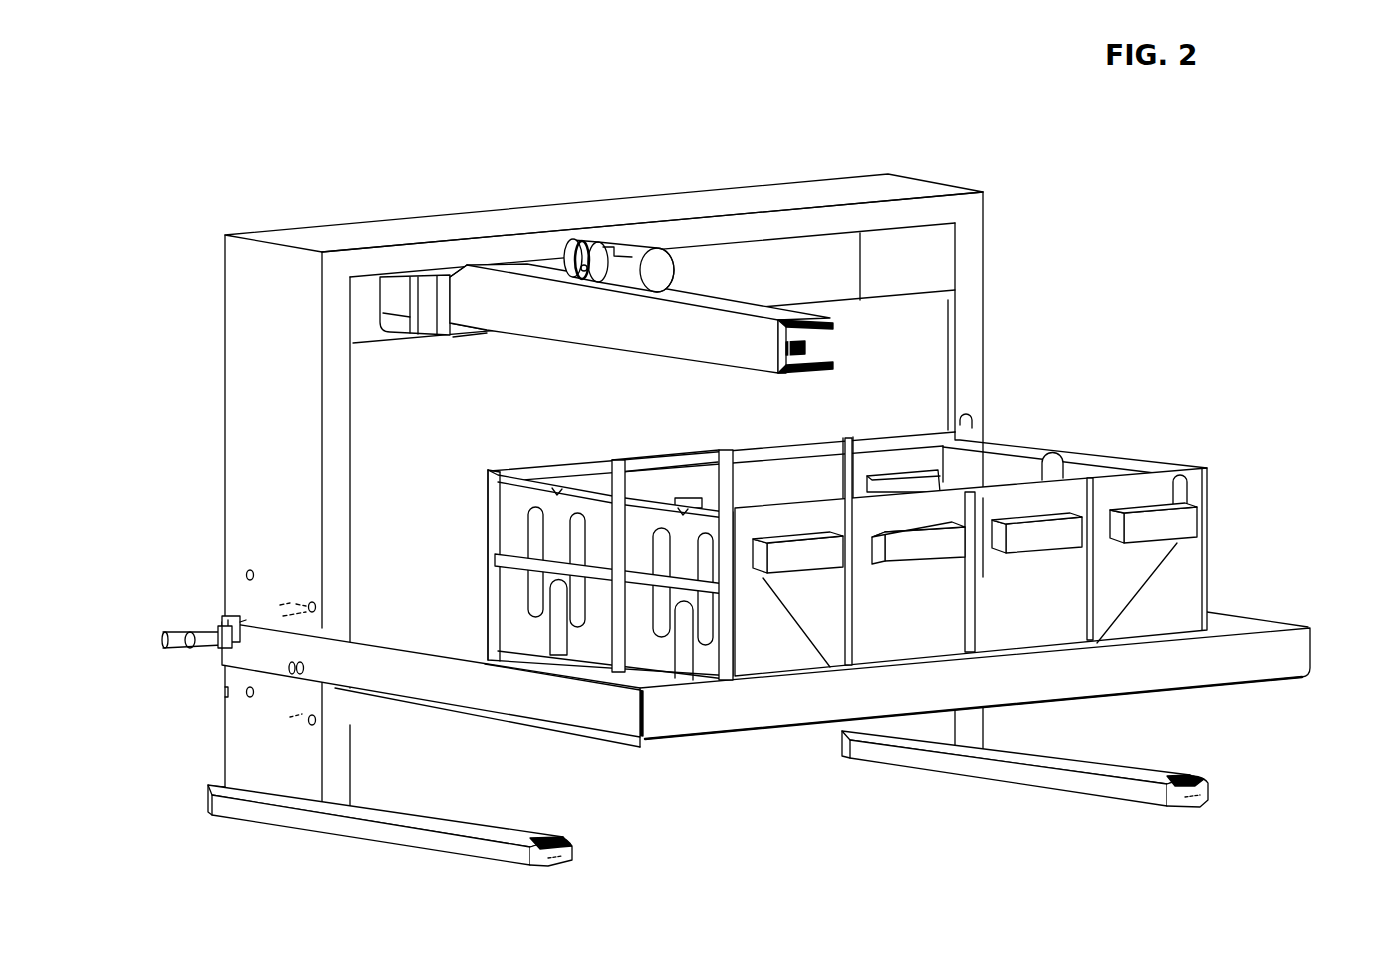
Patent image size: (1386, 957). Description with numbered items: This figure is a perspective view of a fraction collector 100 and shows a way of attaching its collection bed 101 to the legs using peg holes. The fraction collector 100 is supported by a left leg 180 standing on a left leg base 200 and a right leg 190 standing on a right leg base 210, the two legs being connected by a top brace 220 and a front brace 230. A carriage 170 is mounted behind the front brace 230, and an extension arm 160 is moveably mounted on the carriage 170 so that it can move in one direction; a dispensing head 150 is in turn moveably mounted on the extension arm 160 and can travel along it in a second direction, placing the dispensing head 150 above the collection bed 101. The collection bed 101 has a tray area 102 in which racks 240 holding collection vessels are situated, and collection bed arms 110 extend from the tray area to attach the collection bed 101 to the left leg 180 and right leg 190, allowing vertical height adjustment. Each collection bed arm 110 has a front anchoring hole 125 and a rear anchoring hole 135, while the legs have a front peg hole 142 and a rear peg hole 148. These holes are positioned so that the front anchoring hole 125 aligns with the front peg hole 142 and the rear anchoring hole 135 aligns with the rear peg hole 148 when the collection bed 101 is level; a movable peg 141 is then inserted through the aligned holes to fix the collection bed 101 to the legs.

The fraction collector device 100 is at (732, 517).
The collection bed 101 is at (763, 712).
The tray area 102 is at (1237, 628).
The collection bed arm 110 is at (431, 662).
The front anchoring hole 125 is at (305, 666).
The rear anchoring hole 135 is at (253, 615).
The movable peg 141 is at (207, 630).
The front peg hole 142 is at (310, 603).
The rear peg hole 148 is at (250, 570).
The dispensing head 150 is at (632, 253).
The extension arm 160 is at (727, 332).
The carriage 170 is at (402, 293).
The left leg 180 is at (985, 278).
The right leg 190 is at (253, 393).
The left leg base 200 is at (1117, 800).
The right leg base 210 is at (483, 858).
The top brace 220 is at (833, 190).
The front brace 230 is at (907, 383).
The rack 240 is at (1060, 625).